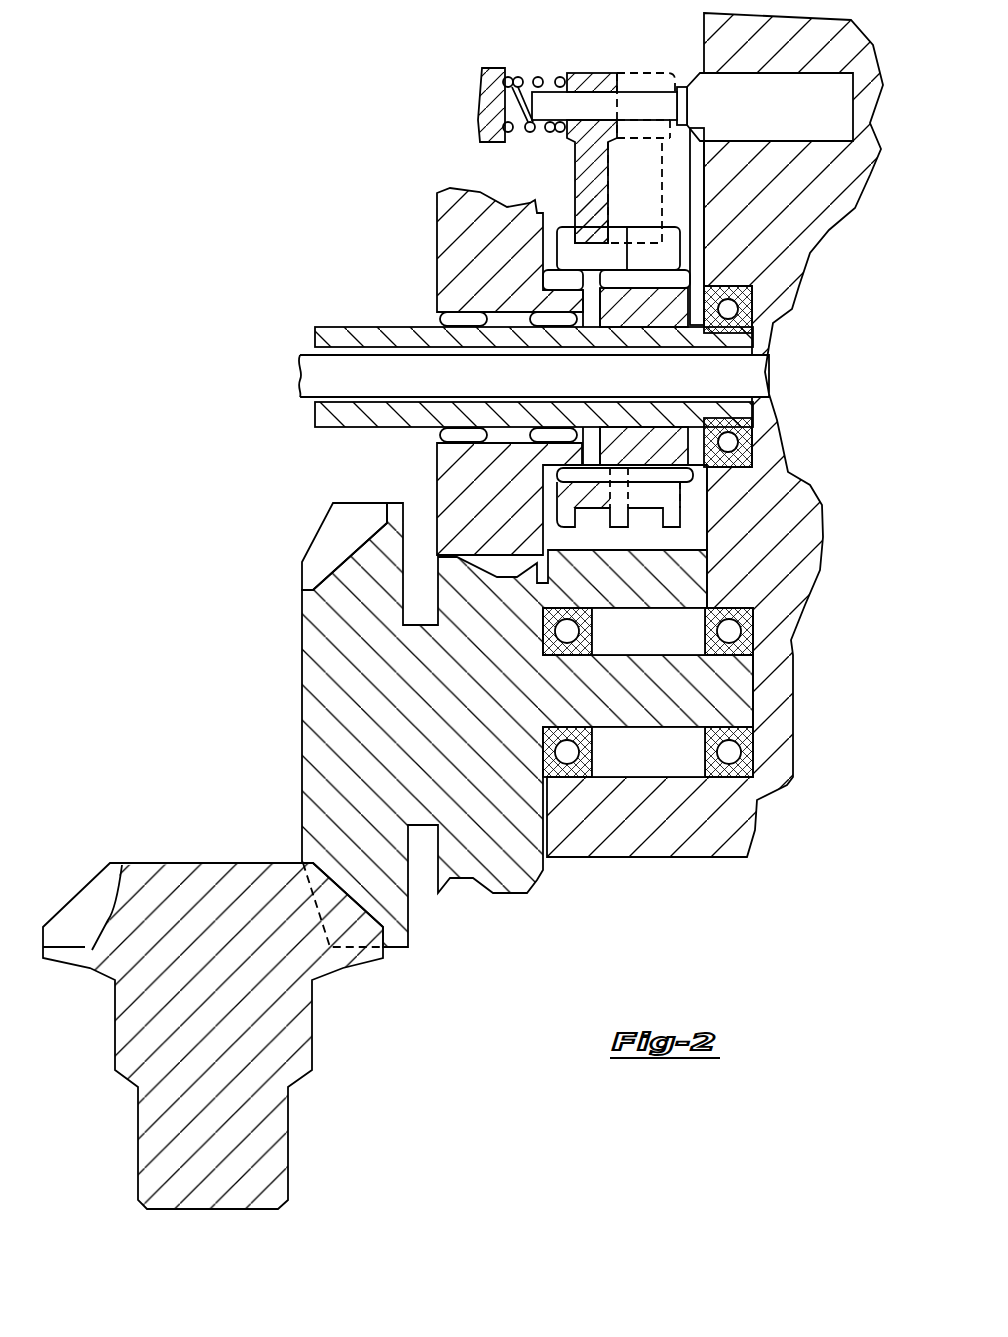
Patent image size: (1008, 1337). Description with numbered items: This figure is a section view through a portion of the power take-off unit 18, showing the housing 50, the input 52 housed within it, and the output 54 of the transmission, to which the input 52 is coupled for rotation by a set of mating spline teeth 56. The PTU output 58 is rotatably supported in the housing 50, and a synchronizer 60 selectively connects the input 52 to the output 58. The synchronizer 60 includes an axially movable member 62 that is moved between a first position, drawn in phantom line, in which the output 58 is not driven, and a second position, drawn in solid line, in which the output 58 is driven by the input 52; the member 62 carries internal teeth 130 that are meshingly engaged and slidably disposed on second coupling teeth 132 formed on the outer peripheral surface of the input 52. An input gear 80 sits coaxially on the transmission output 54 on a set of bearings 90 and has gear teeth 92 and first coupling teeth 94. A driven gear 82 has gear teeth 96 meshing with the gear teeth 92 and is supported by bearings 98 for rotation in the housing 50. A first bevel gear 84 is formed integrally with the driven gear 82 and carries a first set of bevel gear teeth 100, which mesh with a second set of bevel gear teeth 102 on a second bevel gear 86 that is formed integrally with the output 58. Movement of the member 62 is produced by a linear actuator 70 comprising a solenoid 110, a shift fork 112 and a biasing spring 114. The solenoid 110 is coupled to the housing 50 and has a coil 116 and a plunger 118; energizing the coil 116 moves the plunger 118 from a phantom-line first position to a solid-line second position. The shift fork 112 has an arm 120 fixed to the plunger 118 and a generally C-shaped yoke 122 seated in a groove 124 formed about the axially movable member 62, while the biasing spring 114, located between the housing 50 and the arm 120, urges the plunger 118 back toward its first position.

The power take-off unit 18 is at (724, 469).
The housing 50 is at (724, 435).
The input 52 is at (665, 312).
The output of the transmission 54 is at (348, 327).
The mating spline teeth 56 is at (705, 325).
The output 58 is at (213, 1007).
The synchronizer 60 is at (557, 225).
The axially movable member 62 is at (617, 235).
The linear actuator 70 is at (712, 79).
The input gear 80 is at (443, 500).
The driven gear 82 is at (493, 883).
The first bevel gear 84 is at (494, 734).
The second bevel gear 86 is at (75, 908).
The bearings 90 is at (438, 435).
The gear teeth 92 is at (452, 188).
The first coupling teeth 94 is at (550, 473).
The gear teeth 96 is at (448, 885).
The bearings 98 is at (752, 620).
The first set of bevel gear teeth 100 is at (317, 550).
The second set of bevel gear teeth 102 is at (147, 863).
The solenoid 110 is at (795, 130).
The shift fork 112 is at (604, 181).
The biasing spring 114 is at (547, 78).
The coil 116 is at (713, 122).
The plunger 118 is at (666, 92).
The arm 120 is at (612, 73).
The C-shaped yoke 122 is at (588, 232).
The groove 124 is at (588, 258).
The internal teeth 130 is at (590, 285).
The second coupling teeth 132 is at (699, 508).